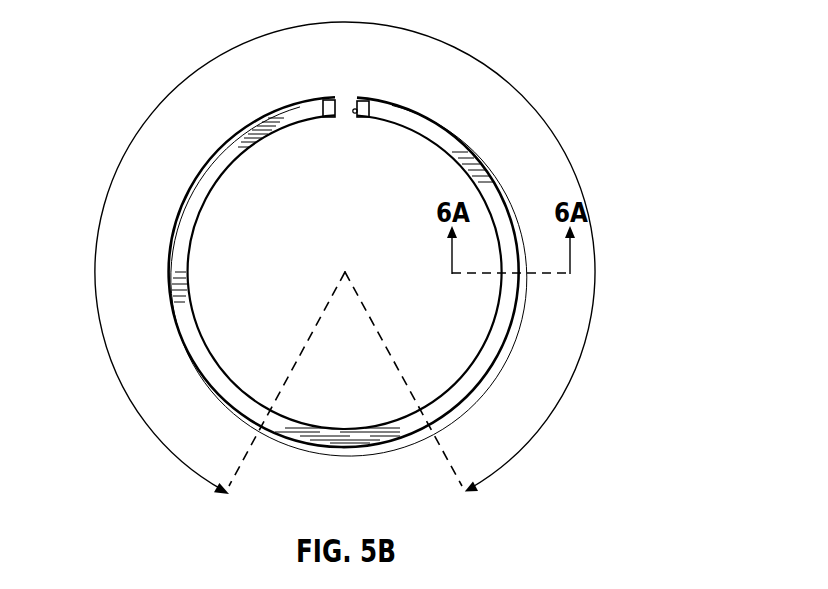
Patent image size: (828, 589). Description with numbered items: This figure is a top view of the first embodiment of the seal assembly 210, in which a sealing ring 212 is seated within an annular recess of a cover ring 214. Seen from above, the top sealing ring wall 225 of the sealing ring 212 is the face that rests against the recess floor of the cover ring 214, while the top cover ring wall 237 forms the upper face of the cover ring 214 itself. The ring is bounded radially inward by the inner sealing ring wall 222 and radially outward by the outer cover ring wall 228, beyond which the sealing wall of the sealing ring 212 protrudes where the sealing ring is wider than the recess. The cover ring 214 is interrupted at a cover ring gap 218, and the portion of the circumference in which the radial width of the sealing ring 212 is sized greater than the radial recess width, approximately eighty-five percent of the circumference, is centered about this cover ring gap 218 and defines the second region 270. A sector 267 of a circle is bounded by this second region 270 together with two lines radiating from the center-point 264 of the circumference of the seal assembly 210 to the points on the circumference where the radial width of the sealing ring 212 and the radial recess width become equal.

The seal assembly 210 is at (178, 45).
The sealing ring 212 is at (426, 112).
The cover ring 214 is at (208, 192).
The cover ring gap 218 is at (357, 110).
The inner sealing ring wall 222 is at (344, 110).
The top sealing ring wall 225 is at (343, 106).
The outer cover ring wall 228 is at (262, 117).
The top cover ring wall 237 is at (218, 168).
The center-point 264 is at (346, 268).
The sector 267 is at (313, 332).
The second region 270 is at (507, 460).